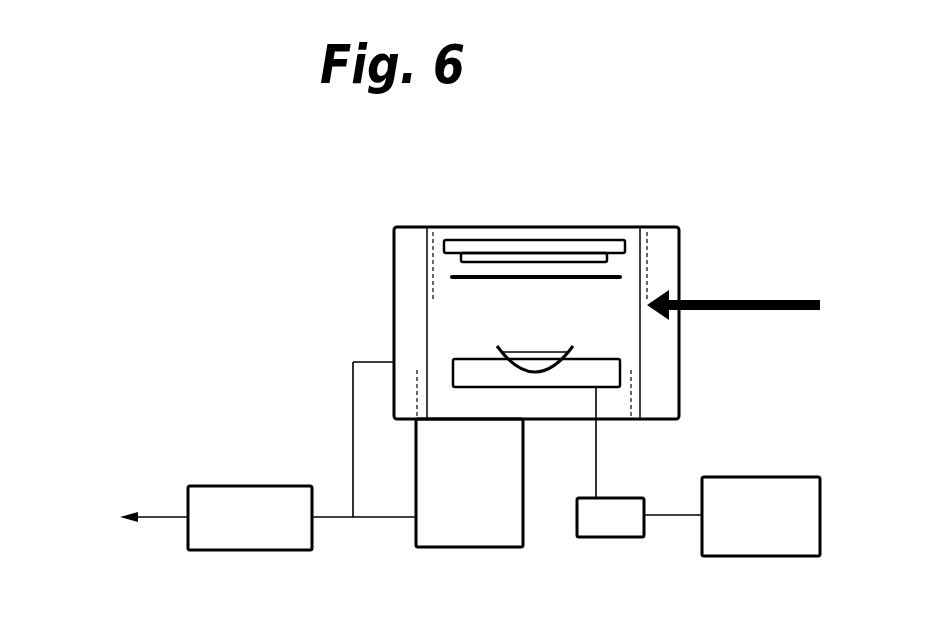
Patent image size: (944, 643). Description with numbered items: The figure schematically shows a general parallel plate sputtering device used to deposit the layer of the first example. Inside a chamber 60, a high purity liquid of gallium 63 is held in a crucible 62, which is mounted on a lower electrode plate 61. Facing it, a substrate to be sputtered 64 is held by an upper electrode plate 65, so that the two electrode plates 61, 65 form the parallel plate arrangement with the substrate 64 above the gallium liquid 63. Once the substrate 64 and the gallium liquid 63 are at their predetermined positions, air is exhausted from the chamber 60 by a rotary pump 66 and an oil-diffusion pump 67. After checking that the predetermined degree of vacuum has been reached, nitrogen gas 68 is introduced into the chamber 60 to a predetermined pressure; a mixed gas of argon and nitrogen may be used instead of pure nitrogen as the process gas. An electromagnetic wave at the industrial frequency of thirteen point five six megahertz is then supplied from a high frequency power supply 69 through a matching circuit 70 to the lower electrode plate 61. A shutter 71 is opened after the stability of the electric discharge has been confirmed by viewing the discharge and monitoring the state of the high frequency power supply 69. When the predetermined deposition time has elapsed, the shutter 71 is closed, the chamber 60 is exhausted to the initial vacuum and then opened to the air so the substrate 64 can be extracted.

The chamber 60 is at (639, 230).
The lower electrode plate 61 is at (610, 378).
The crucible 62 is at (572, 364).
The high purity liquid of gallium 63 is at (523, 357).
The substrate to be sputtered 64 is at (550, 258).
The upper electrode plate 65 is at (504, 247).
The rotary pump 66 is at (249, 550).
The oil-diffusion pump 67 is at (470, 547).
The nitrogen gas 68 is at (784, 312).
The high frequency power supply 69 is at (765, 556).
The matching circuit 70 is at (613, 537).
The shutter 71 is at (617, 271).